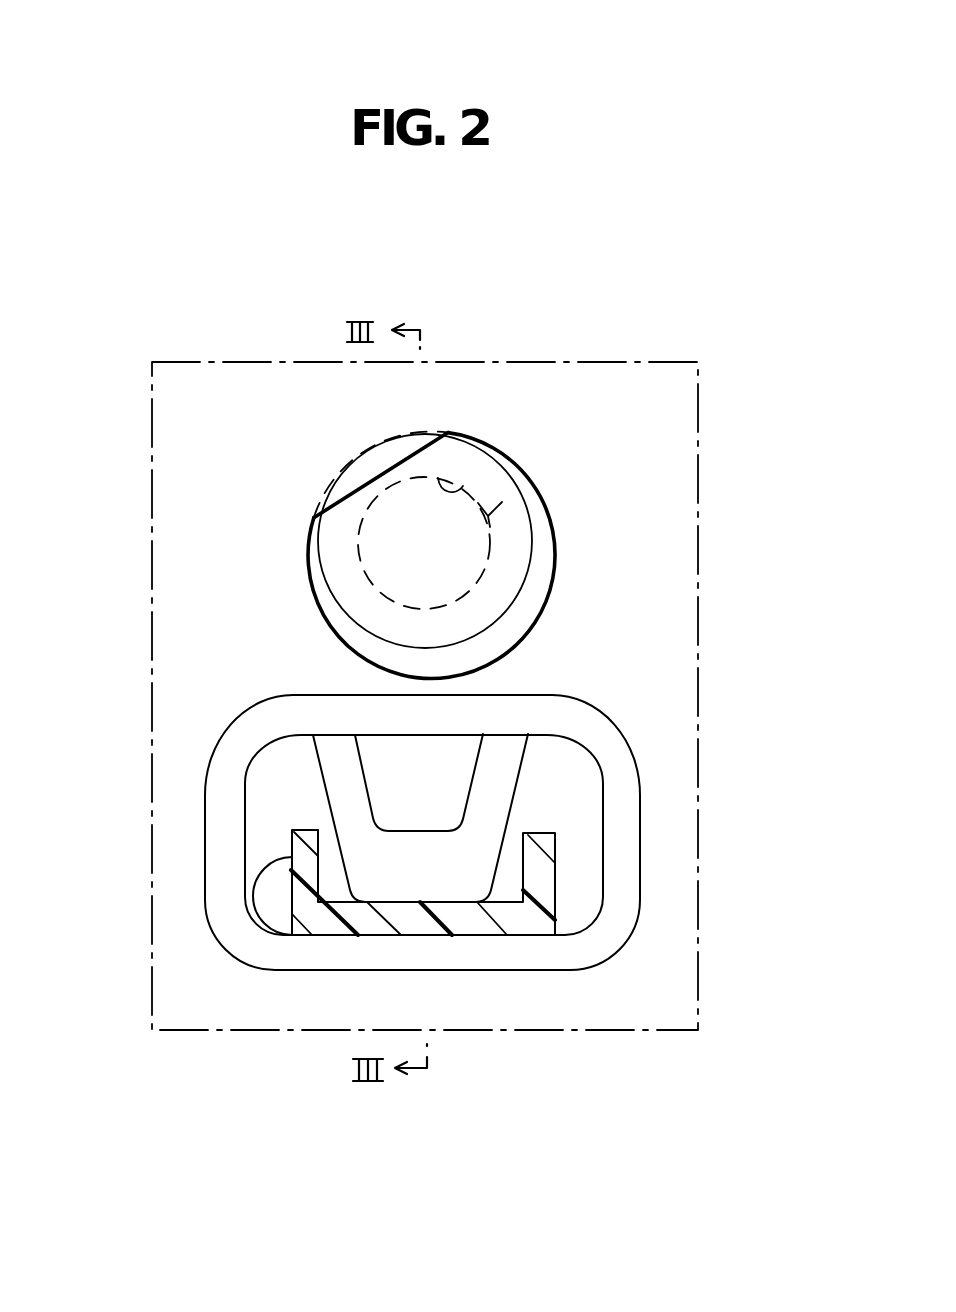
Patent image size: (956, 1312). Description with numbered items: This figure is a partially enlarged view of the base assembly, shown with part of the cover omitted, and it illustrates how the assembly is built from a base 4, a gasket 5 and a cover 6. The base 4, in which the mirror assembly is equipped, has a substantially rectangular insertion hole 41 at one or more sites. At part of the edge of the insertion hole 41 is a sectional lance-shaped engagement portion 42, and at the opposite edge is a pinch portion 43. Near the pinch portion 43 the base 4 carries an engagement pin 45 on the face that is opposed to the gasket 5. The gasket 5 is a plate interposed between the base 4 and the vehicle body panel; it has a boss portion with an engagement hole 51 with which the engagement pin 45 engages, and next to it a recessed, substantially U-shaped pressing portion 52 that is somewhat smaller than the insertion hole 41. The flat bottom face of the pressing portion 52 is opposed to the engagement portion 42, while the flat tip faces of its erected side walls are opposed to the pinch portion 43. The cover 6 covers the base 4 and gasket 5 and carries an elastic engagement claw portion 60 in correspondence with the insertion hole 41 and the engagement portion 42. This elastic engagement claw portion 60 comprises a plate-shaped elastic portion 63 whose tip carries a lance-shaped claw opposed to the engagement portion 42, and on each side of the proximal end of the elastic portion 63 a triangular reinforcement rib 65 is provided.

The base 4 is at (699, 407).
The gasket 5 is at (546, 808).
The cover 6 is at (386, 979).
The insertion hole 41 is at (248, 811).
The engagement portion 42 is at (353, 952).
The pinch portion 43 is at (465, 722).
The engagement pin 45 is at (512, 492).
The engagement hole 51 is at (438, 477).
The pressing portion 52 is at (508, 766).
The elastic engagement claw portion 60 is at (423, 970).
The elastic portion 63 is at (467, 921).
The reinforcement rib 65 is at (256, 898).